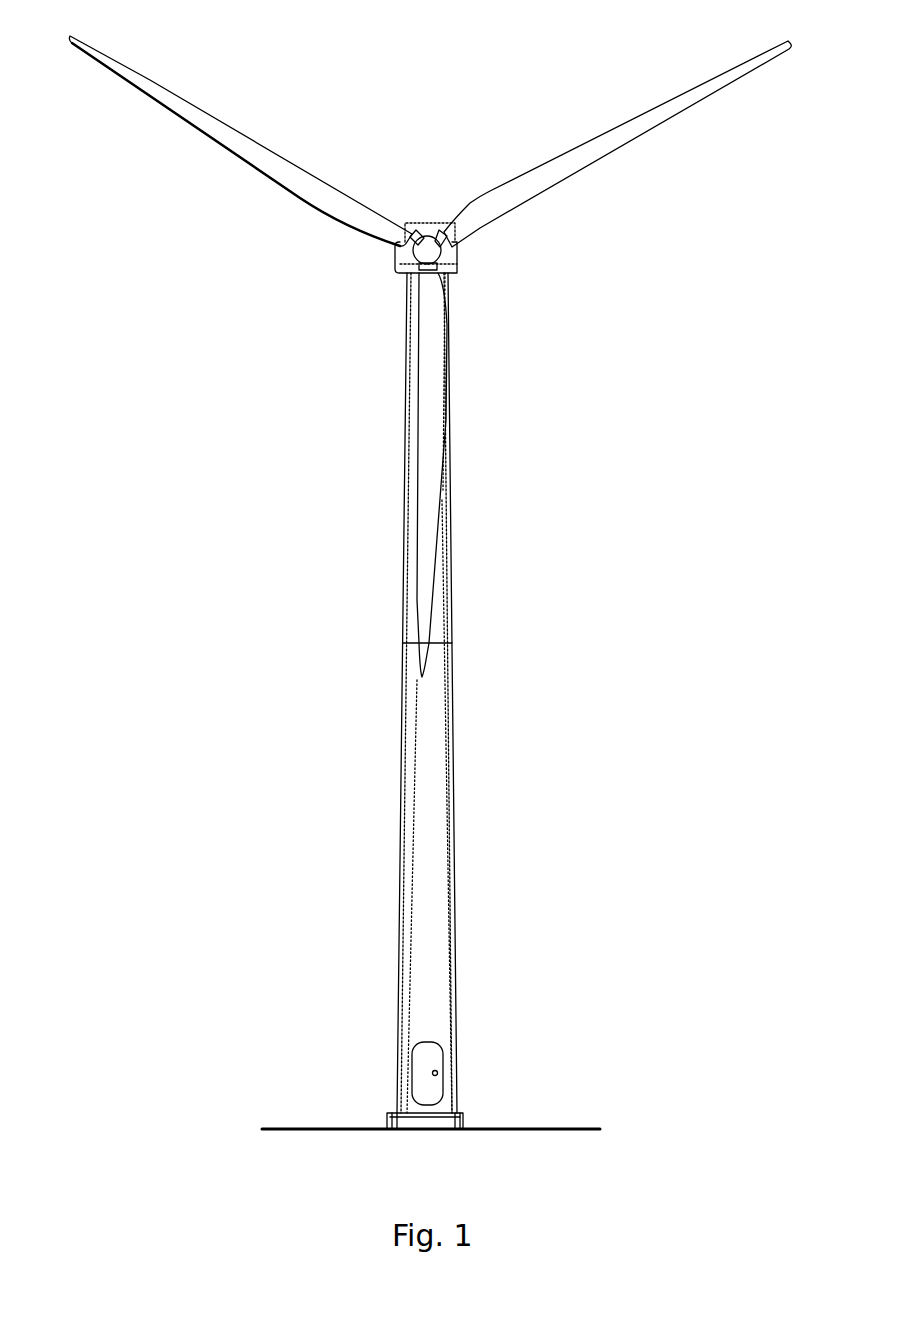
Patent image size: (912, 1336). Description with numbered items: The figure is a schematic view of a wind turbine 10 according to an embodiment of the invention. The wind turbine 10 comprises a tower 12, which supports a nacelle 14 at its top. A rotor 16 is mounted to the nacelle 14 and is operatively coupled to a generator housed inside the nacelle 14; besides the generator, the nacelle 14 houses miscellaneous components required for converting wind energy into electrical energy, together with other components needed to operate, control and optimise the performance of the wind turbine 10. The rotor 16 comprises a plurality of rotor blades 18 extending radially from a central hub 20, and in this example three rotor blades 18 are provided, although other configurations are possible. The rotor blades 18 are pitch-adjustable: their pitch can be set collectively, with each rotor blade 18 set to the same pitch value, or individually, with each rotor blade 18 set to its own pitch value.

The wind turbine 10 is at (315, 556).
The tower 12 is at (452, 688).
The nacelle 14 is at (458, 270).
The rotor 16 is at (310, 318).
The rotor blade 18 is at (308, 170).
The central hub 20 is at (422, 234).